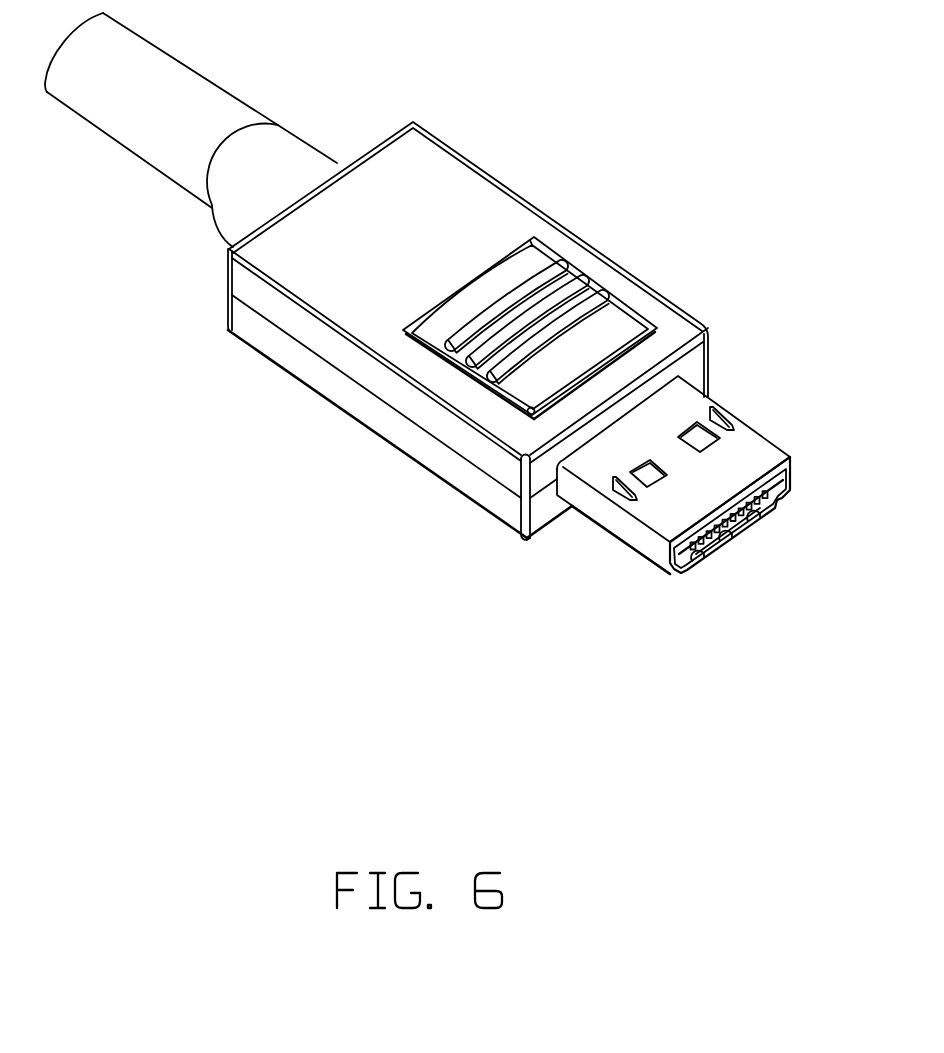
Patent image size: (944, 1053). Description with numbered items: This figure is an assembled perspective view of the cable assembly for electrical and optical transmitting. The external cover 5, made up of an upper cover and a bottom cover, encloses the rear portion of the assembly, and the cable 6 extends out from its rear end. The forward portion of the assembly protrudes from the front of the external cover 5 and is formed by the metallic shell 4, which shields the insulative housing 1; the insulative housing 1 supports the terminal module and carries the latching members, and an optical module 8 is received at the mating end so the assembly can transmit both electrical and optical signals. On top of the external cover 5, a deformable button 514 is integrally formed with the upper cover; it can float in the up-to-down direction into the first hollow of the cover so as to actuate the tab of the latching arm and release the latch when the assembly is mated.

The insulative housing 1 is at (448, 324).
The metallic shell 4 is at (680, 502).
The external cover 5 is at (451, 331).
The deformable button 514 is at (582, 343).
The cable 6 is at (182, 107).
The optical module 8 is at (760, 508).